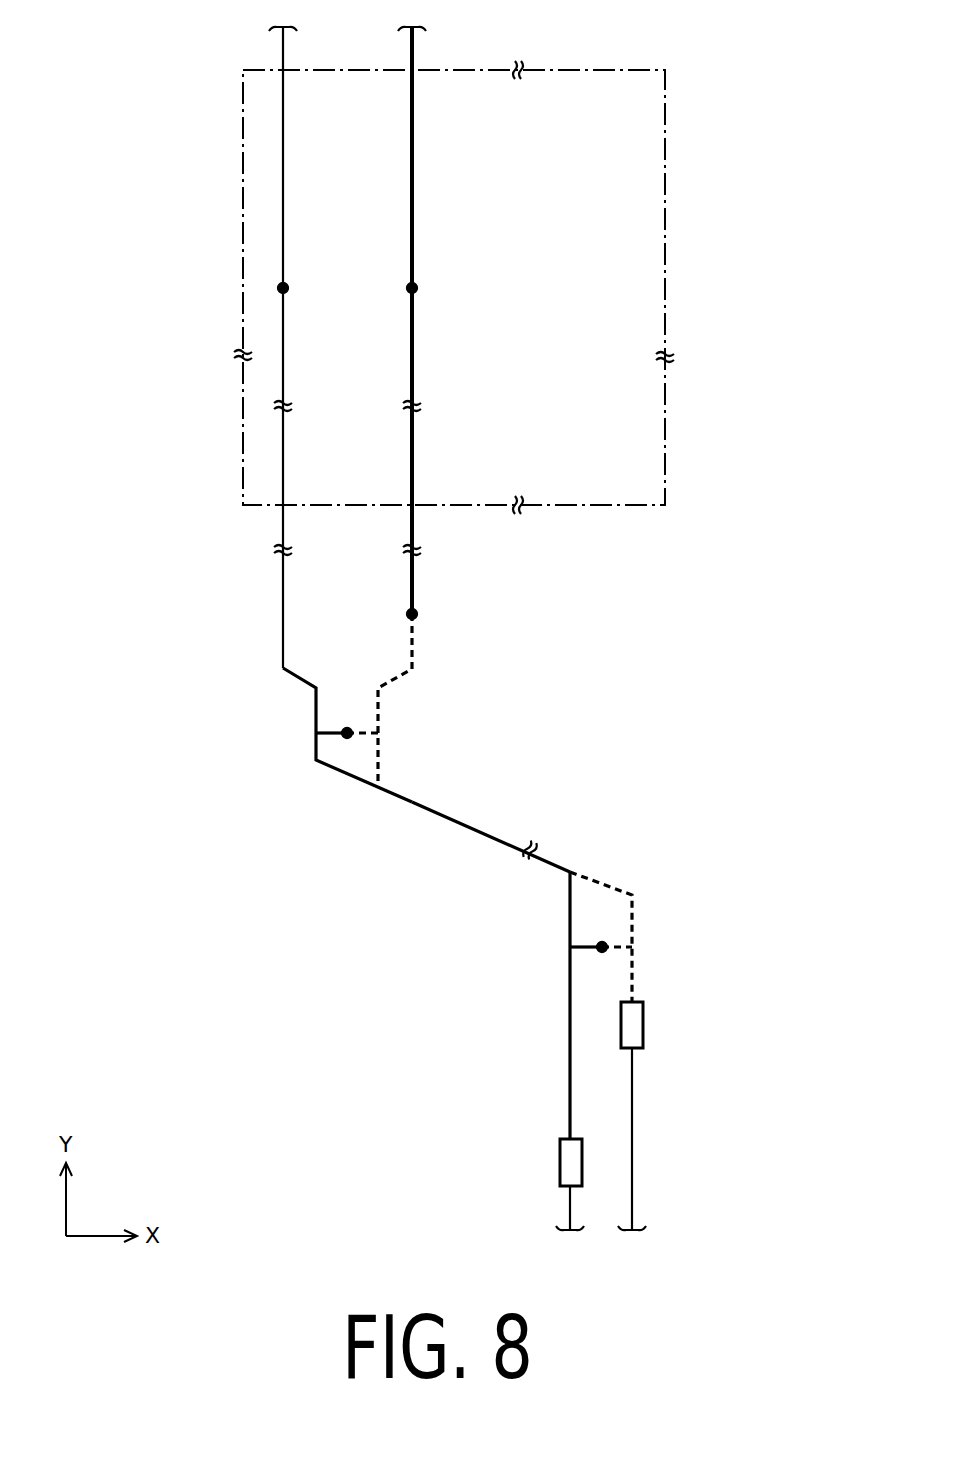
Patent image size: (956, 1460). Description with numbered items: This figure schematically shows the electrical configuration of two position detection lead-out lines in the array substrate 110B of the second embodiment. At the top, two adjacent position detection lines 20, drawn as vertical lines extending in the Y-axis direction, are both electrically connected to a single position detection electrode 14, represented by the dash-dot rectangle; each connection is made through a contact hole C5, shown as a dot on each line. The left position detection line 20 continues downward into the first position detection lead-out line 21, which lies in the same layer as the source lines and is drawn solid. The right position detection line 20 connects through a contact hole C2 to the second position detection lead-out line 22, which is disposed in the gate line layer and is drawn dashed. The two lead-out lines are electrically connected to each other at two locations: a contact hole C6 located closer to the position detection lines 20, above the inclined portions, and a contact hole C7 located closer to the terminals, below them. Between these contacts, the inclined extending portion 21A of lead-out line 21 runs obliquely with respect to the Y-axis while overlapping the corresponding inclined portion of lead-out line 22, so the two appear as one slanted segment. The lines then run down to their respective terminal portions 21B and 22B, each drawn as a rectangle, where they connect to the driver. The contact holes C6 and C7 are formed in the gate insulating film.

The position detection line 20 is at (413, 140).
The display device 110B is at (527, 287).
The position detection electrode 14 is at (630, 222).
The contact hole C5 is at (410, 290).
The contact hole C2 is at (418, 612).
The position detection lead-out line 21 is at (313, 713).
The contact hole C6 is at (352, 730).
The position detection lead-out line 22 is at (382, 760).
The inclined extending portion 21A is at (427, 810).
The contact hole C7 is at (605, 942).
The terminal portion 22B is at (632, 1023).
The terminal portion 21B is at (568, 1160).